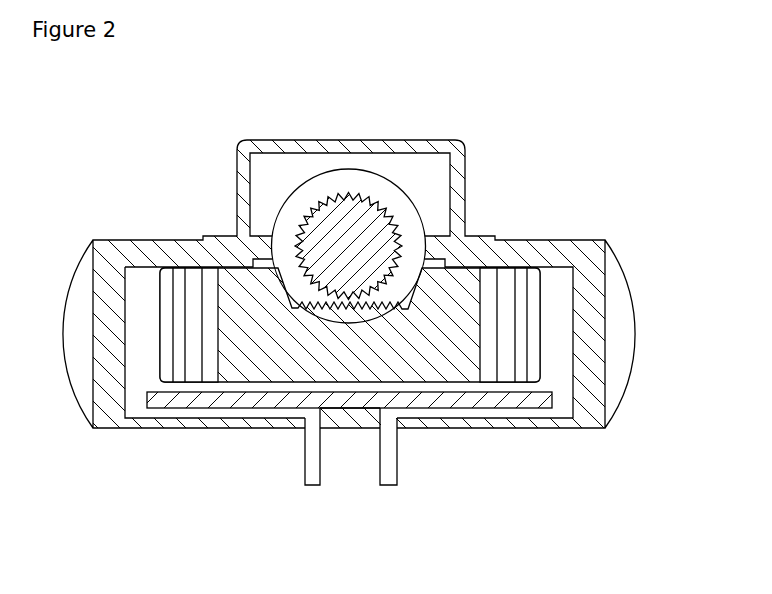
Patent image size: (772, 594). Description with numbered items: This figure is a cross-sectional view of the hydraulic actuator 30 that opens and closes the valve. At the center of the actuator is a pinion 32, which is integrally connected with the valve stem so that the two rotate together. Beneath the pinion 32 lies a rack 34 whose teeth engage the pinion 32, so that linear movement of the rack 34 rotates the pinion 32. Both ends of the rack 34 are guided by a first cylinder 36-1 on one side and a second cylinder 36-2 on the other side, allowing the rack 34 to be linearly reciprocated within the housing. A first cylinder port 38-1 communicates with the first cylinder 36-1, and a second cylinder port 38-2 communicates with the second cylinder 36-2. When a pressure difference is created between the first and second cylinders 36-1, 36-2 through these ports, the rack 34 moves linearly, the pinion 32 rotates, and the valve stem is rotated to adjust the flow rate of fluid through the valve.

The hydraulic actuator 30 is at (536, 142).
The pinion 32 is at (387, 235).
The rack 34 is at (468, 327).
The first cylinder 36-1 is at (138, 290).
The second cylinder 36-2 is at (557, 273).
The first cylinder port 38-1 is at (311, 488).
The second cylinder port 38-2 is at (388, 488).